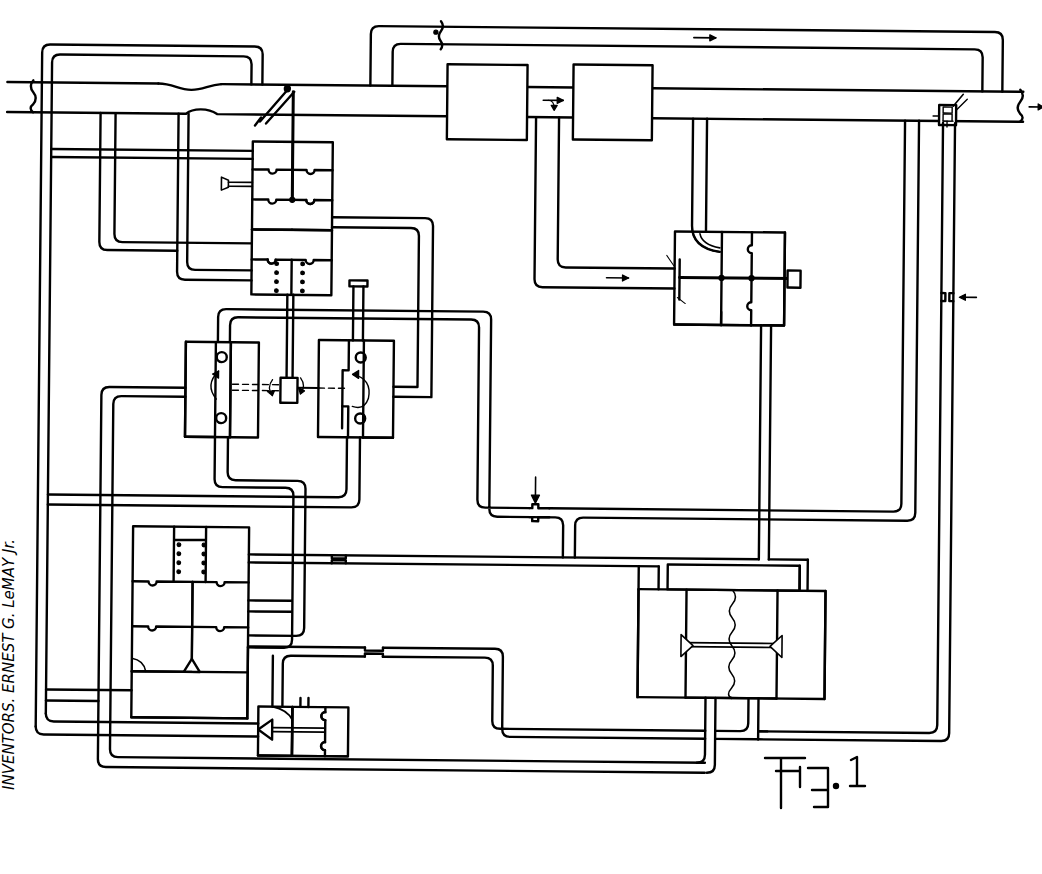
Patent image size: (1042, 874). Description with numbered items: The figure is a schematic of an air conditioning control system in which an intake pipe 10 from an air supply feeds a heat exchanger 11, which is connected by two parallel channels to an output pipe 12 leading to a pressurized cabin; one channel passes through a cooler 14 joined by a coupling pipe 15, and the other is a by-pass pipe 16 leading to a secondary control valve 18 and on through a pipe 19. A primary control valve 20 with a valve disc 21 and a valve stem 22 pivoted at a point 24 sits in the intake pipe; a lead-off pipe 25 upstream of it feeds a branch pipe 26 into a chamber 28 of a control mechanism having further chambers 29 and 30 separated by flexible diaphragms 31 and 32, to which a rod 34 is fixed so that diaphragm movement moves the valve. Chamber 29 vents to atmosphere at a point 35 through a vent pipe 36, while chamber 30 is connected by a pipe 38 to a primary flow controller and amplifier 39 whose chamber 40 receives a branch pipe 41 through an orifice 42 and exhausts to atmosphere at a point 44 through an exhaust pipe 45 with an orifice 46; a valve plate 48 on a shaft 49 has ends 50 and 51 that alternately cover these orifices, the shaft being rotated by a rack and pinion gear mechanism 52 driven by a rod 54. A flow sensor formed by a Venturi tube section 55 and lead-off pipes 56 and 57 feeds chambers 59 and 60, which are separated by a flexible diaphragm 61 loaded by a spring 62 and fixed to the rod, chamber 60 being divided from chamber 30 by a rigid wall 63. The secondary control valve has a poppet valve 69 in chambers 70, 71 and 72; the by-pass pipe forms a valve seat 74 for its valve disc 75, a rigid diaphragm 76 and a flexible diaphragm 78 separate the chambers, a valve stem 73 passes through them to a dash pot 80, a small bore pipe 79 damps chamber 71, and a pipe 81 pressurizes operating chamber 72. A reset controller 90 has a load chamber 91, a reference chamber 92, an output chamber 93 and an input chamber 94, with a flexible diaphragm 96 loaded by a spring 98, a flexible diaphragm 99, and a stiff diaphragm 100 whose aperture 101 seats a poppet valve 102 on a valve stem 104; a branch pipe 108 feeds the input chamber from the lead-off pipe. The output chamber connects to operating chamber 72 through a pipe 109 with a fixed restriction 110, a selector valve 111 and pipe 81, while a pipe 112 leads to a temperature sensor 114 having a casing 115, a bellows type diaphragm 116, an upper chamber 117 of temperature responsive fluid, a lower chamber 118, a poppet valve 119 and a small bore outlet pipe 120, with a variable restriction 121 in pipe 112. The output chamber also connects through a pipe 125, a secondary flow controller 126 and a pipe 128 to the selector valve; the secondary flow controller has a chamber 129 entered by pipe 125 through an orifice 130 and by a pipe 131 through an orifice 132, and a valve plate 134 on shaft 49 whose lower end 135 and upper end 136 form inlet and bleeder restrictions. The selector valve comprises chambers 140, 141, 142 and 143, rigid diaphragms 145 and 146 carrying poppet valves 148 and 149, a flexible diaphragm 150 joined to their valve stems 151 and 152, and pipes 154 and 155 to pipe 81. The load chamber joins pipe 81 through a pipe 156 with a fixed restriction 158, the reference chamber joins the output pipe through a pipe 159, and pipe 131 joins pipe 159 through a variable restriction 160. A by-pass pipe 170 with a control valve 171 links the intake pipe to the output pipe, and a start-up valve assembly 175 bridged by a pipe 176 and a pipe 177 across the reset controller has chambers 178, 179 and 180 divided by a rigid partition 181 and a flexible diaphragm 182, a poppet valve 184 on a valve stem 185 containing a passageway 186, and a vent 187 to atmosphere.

The intake pipe 10 is at (72, 93).
The heat exchanger 11 is at (484, 132).
The output pipe 12 is at (824, 87).
The cooler 14 is at (615, 130).
The coupling pipe 15 is at (540, 87).
The by-pass pipe 16 is at (601, 265).
The secondary control valve 18 is at (736, 230).
The pipe 19 is at (709, 166).
The primary control valve 20 is at (270, 89).
The valve disc 21 is at (290, 90).
The valve stem 22 is at (292, 100).
The pivot point 24 is at (270, 122).
The lead-off pipe 25 is at (118, 49).
The branch pipe 26 is at (129, 154).
The chamber 28 is at (320, 148).
The chamber 29 is at (310, 187).
The chamber 30 is at (318, 237).
The flexible diaphragm 31 is at (303, 170).
The flexible diaphragm 32 is at (308, 210).
The rod 34 is at (292, 130).
The atmospheric point 35 is at (217, 187).
The vent pipe 36 is at (234, 192).
The pipe 38 is at (433, 262).
The primary flow controller and amplifier 39 is at (394, 416).
The chamber 40 is at (380, 440).
The branch pipe 41 is at (147, 500).
The orifice 42 is at (348, 425).
The atmospheric point 44 is at (364, 282).
The exhaust pipe 45 is at (364, 296).
The orifice 46 is at (350, 356).
The valve plate 48 is at (347, 405).
The shaft 49 is at (306, 382).
The valve plate end 50 is at (366, 358).
The valve plate end 51 is at (366, 419).
The rack and pinion gear mechanism 52 is at (284, 380).
The rod 54 is at (286, 327).
The Venturi tube section 55 is at (186, 92).
The lead-off pipe 56 is at (175, 231).
The lead-off pipe 57 is at (113, 204).
The chamber 59 is at (252, 294).
The chamber 60 is at (322, 255).
The flexible diaphragm 61 is at (246, 266).
The spring 62 is at (310, 275).
The rigid wall 63 is at (271, 233).
The poppet valve 69 is at (681, 282).
The chamber 70 is at (688, 323).
The chamber 71 is at (732, 323).
The operating chamber 72 is at (775, 306).
The valve stem 73 is at (746, 278).
The valve seat 74 is at (671, 253).
The valve disc 75 is at (696, 306).
The rigid diaphragm 76 is at (718, 316).
The flexible diaphragm 78 is at (752, 264).
The small bore pipe 79 is at (702, 236).
The dash pot 80 is at (795, 266).
The pipe 81 is at (772, 383).
The reset controller 90 is at (140, 552).
The load chamber 91 is at (191, 556).
The reference chamber 92 is at (190, 613).
The output chamber 93 is at (214, 643).
The input chamber 94 is at (189, 700).
The flexible diaphragm 96 is at (168, 584).
The spring 98 is at (176, 556).
The flexible diaphragm 99 is at (190, 616).
The stiff diaphragm 100 is at (130, 664).
The aperture 101 is at (192, 670).
The poppet valve 102 is at (186, 680).
The valve stem 104 is at (192, 640).
The branch pipe 108 is at (90, 690).
The pipe 109 is at (506, 686).
The fixed restriction 110 is at (376, 662).
The selector valve 111 is at (827, 612).
The pipe 112 is at (954, 522).
The temperature sensor 114 is at (956, 124).
The casing 115 is at (938, 104).
The bellows type diaphragm 116 is at (938, 113).
The upper chamber 117 is at (952, 96).
The lower chamber 118 is at (928, 115).
The poppet valve 119 is at (942, 120).
The small bore outlet pipe 120 is at (957, 106).
The variable restriction 121 is at (940, 298).
The pipe 125 is at (308, 580).
The secondary flow controller 126 is at (185, 349).
The pipe 128 is at (383, 760).
The chamber 129 is at (190, 362).
The orifice 130 is at (226, 424).
The pipe 131 is at (491, 437).
The orifice 132 is at (226, 364).
The valve plate 134 is at (206, 410).
The lower end 135 is at (218, 427).
The upper end 136 is at (216, 361).
The outer chamber 140 is at (665, 643).
The inner chamber 141 is at (712, 678).
The inner chamber 142 is at (758, 677).
The outer chamber 143 is at (820, 645).
The rigid diaphragm 145 is at (684, 686).
The rigid diaphragm 146 is at (786, 690).
The poppet valve 148 is at (681, 644).
The poppet valve 149 is at (786, 640).
The flexible diaphragm 150 is at (730, 592).
The valve stem 151 is at (708, 636).
The valve stem 152 is at (755, 636).
The pipe 154 is at (650, 577).
The pipe 155 is at (812, 570).
The pipe 156 is at (396, 556).
The fixed restriction 158 is at (338, 556).
The pipe 159 is at (824, 507).
The variable restriction 160 is at (532, 522).
The by-pass pipe 170 is at (684, 48).
The control valve 171 is at (430, 38).
The start-up valve assembly 175 is at (352, 718).
The pipe 176 is at (80, 740).
The pipe 177 is at (284, 680).
The chamber 178 is at (284, 759).
The chamber 179 is at (336, 728).
The chamber 180 is at (340, 746).
The rigid partition 181 is at (270, 718).
The flexible diaphragm 182 is at (333, 760).
The poppet valve 184 is at (260, 746).
The valve stem 185 is at (274, 760).
The passageway 186 is at (306, 760).
The vent 187 is at (308, 702).